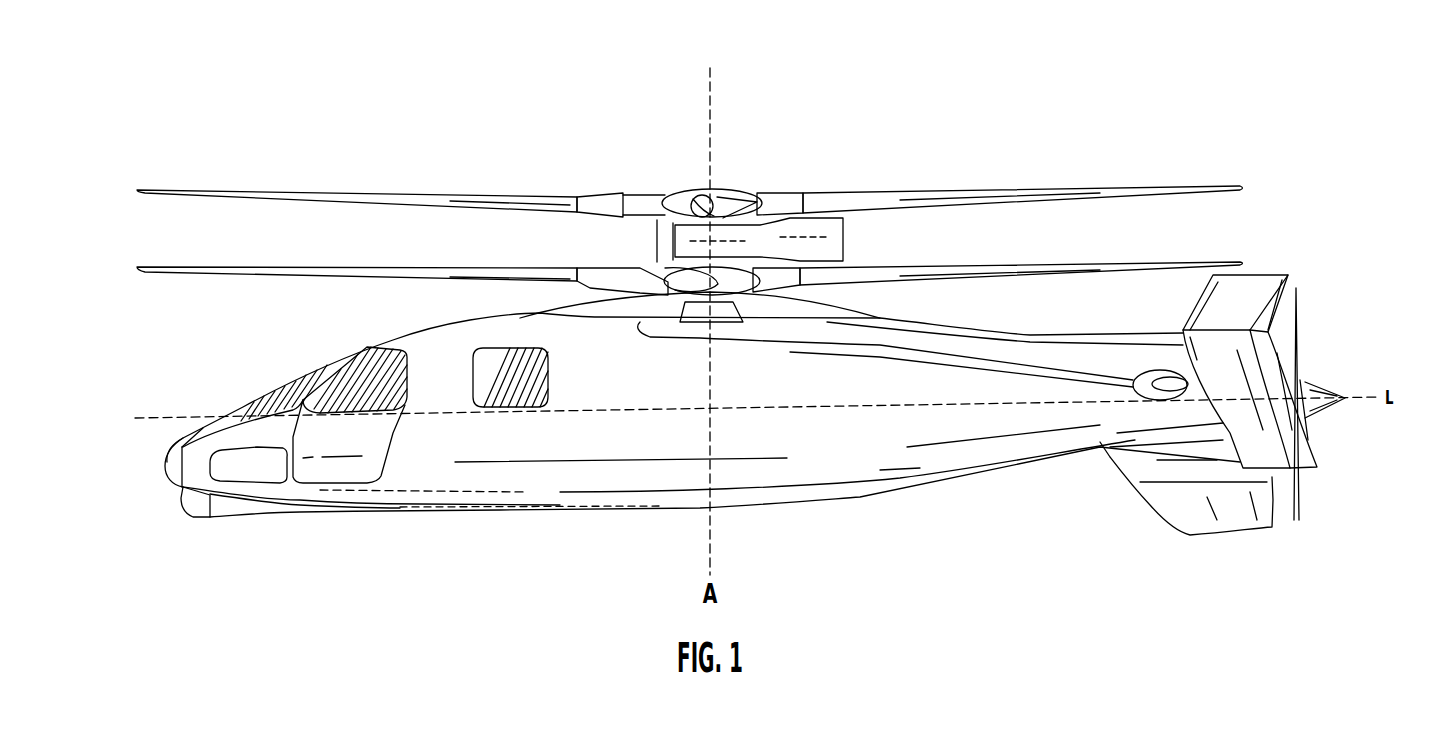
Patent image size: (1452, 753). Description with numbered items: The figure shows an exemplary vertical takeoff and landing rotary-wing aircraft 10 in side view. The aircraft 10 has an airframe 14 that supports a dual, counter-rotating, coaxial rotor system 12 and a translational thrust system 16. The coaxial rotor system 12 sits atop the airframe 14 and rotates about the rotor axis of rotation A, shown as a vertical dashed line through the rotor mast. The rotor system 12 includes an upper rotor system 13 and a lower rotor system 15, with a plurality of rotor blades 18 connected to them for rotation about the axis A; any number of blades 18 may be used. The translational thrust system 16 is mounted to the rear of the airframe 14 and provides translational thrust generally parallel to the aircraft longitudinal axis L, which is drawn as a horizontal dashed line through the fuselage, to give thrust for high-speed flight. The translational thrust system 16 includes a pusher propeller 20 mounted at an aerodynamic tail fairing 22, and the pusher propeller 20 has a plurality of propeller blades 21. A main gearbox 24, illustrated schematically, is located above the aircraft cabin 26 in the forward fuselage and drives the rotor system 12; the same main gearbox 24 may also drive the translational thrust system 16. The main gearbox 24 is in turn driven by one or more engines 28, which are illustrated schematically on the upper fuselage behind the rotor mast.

The rotary-wing aircraft 10 is at (1170, 108).
The coaxial rotor system 12 is at (690, 185).
The upper rotor system 13 is at (660, 198).
The airframe 14 is at (502, 497).
The lower rotor system 15 is at (848, 254).
The translational thrust system 16 is at (1302, 363).
The rotor blades 18 is at (385, 270).
The pusher propeller 20 is at (1345, 350).
The propeller blades 21 is at (1297, 330).
The aerodynamic tail fairing 22 is at (1318, 460).
The main gearbox 24 is at (693, 313).
The aircraft cabin 26 is at (413, 348).
The engines 28 is at (803, 313).